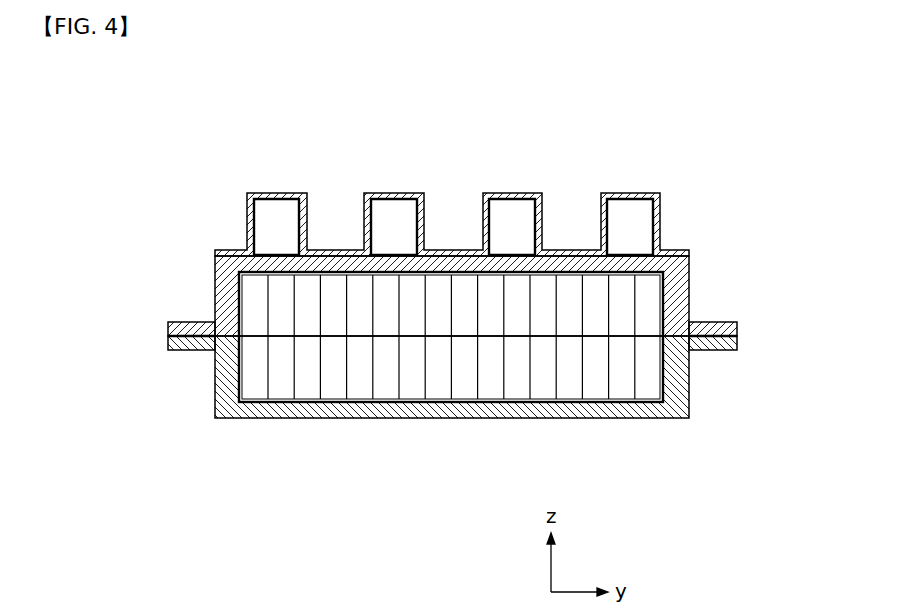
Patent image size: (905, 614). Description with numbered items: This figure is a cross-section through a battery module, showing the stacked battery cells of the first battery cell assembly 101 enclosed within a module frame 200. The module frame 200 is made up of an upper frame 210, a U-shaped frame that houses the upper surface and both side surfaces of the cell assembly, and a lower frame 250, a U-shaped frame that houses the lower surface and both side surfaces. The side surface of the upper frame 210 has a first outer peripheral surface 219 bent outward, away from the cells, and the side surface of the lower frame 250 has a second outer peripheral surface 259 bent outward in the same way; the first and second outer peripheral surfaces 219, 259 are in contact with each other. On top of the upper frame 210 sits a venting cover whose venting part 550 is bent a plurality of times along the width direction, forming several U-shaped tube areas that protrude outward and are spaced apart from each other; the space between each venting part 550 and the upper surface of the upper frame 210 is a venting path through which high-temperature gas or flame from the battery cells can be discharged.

The first battery cell assembly 101 is at (623, 393).
The module frame 200 is at (538, 389).
The upper frame 210 is at (690, 275).
The first outer peripheral surface 219 is at (182, 322).
The lower frame 250 is at (690, 375).
The second outer peripheral surface 259 is at (175, 350).
The venting part 550 is at (382, 193).